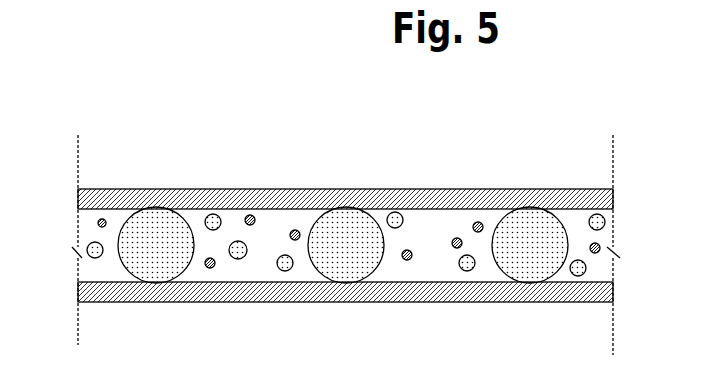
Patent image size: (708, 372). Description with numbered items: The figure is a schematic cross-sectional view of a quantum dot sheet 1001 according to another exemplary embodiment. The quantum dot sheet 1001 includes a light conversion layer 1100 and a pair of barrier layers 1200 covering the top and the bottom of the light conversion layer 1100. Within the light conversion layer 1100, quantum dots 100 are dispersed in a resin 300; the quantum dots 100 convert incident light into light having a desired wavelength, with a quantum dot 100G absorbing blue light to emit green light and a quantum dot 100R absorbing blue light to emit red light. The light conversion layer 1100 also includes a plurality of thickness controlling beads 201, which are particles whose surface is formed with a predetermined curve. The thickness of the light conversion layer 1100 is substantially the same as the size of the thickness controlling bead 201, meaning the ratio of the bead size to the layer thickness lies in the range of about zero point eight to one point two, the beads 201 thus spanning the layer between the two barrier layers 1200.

The quantum dot sheet 1001 is at (117, 88).
The light conversion layer 1100 is at (311, 233).
The barrier layer 1200 is at (605, 195).
The quantum dot 100 is at (242, 189).
The quantum dot emitting red light 100R is at (238, 241).
The quantum dot emitting green light 100G is at (277, 198).
The resin 300 is at (457, 227).
The thickness controlling bead 201 is at (528, 281).